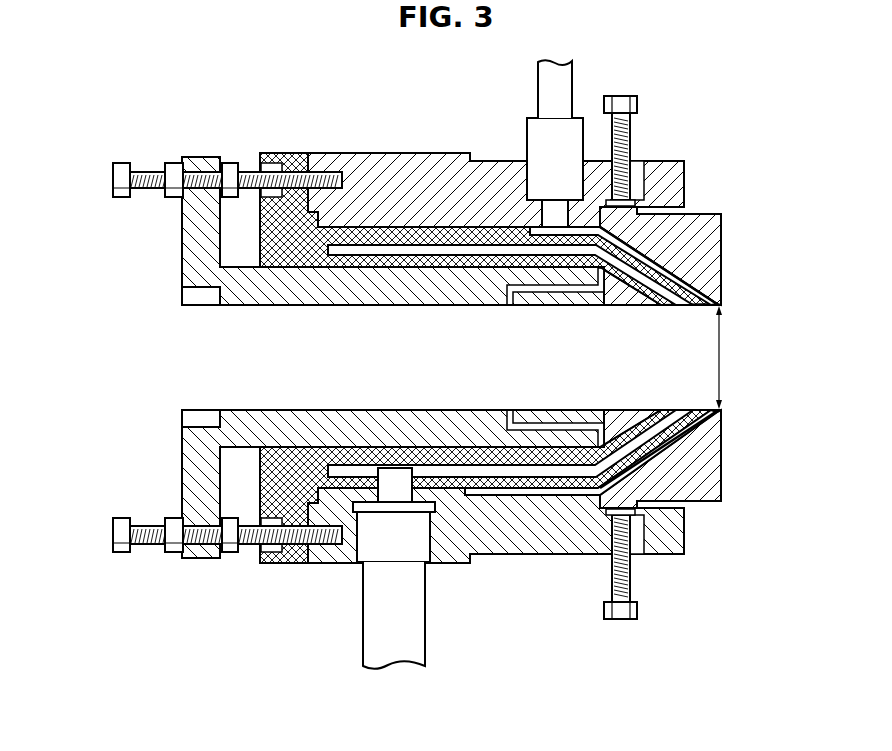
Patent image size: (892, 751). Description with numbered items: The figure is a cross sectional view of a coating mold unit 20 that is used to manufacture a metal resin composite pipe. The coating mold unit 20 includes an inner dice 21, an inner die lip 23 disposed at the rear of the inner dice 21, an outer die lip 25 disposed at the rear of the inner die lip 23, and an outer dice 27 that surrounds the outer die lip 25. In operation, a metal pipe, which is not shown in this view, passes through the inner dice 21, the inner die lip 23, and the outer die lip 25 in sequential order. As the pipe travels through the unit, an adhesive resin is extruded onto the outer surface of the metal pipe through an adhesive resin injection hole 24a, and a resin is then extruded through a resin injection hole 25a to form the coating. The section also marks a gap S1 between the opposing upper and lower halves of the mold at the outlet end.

The coating mold unit 20 is at (526, 692).
The inner dice 21 is at (248, 415).
The inner die lip 23 is at (613, 418).
The adhesive resin injection hole 24a is at (641, 432).
The outer die lip 25 is at (689, 307).
The resin injection hole 25a is at (663, 262).
The outer dice 27 is at (718, 241).
The gap S1 is at (732, 357).